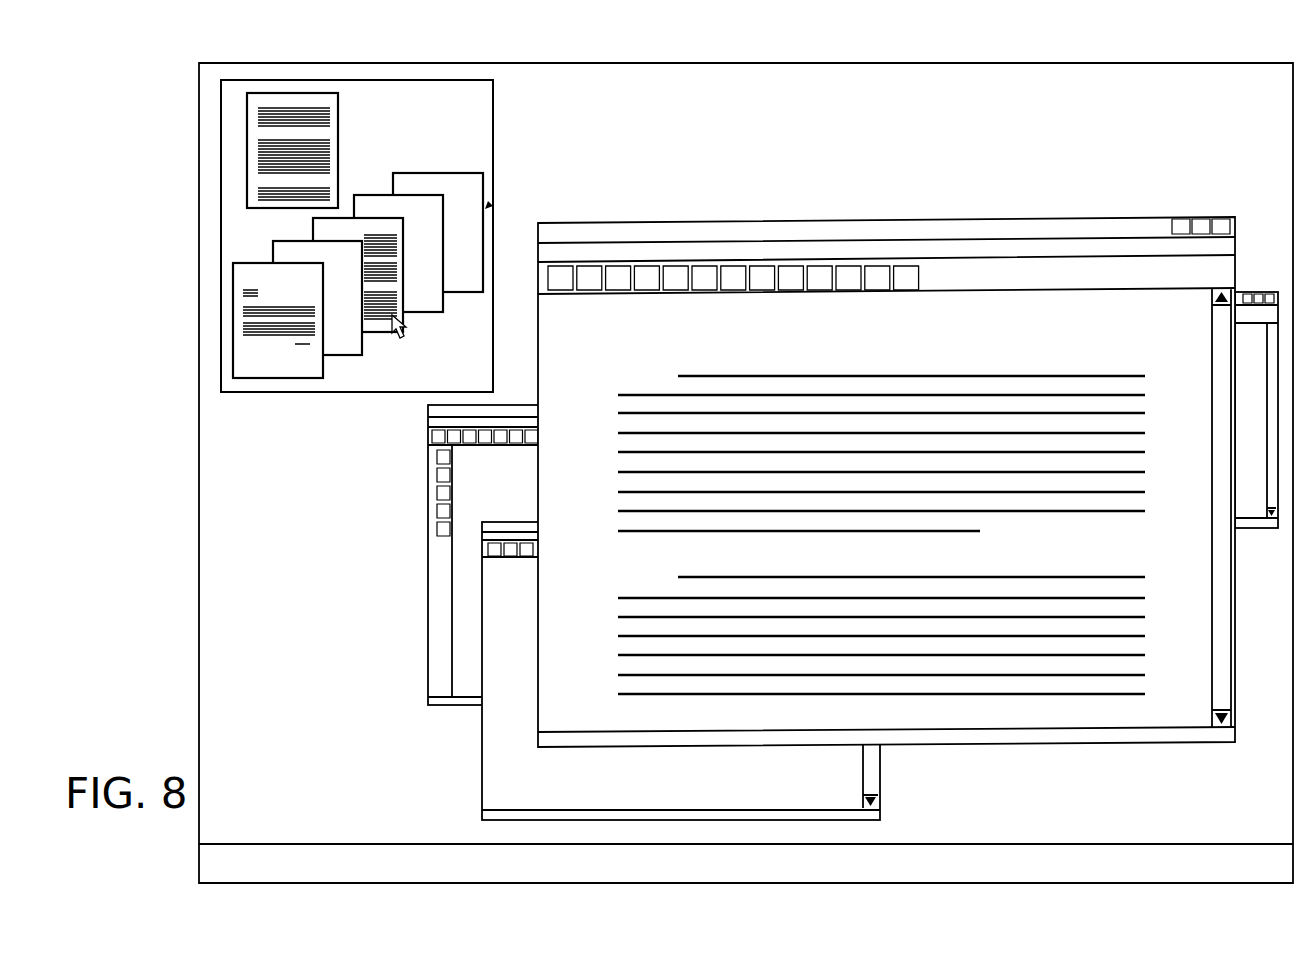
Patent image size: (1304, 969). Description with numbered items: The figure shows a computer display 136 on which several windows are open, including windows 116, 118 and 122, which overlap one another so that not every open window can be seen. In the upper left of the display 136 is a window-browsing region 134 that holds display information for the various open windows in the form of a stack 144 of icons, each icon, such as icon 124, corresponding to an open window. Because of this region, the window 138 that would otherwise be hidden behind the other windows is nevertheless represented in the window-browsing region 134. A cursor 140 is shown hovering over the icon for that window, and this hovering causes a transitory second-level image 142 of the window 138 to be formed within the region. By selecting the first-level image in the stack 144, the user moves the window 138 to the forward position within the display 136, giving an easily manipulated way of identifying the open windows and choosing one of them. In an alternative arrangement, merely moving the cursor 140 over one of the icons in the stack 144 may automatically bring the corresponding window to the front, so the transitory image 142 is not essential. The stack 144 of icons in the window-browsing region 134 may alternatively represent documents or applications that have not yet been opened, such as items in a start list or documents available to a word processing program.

The opened window 116 is at (270, 367).
The opened window 118 is at (440, 574).
The opened window 122 is at (377, 205).
The icon 124 is at (460, 182).
The window-browsing region 134 is at (484, 118).
The display 136 is at (152, 613).
The window 138 is at (858, 228).
The cursor 140 is at (403, 328).
The transitory second-level image 142 is at (250, 168).
The stack 144 is at (488, 206).